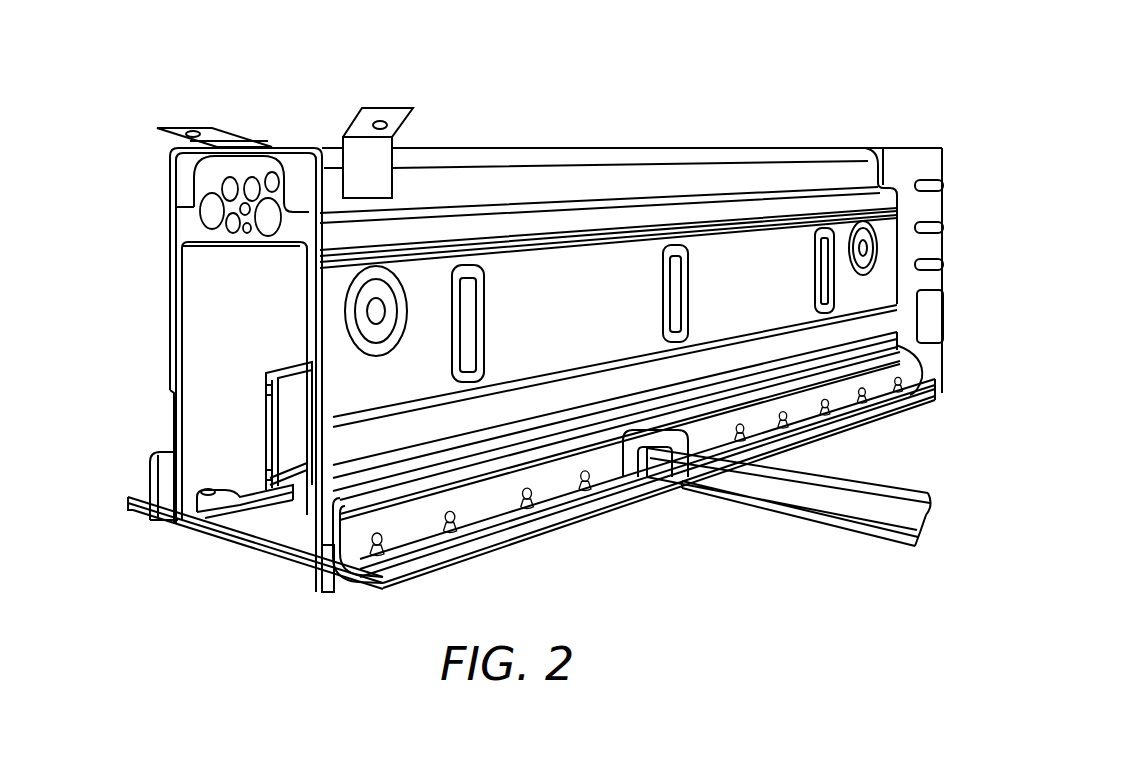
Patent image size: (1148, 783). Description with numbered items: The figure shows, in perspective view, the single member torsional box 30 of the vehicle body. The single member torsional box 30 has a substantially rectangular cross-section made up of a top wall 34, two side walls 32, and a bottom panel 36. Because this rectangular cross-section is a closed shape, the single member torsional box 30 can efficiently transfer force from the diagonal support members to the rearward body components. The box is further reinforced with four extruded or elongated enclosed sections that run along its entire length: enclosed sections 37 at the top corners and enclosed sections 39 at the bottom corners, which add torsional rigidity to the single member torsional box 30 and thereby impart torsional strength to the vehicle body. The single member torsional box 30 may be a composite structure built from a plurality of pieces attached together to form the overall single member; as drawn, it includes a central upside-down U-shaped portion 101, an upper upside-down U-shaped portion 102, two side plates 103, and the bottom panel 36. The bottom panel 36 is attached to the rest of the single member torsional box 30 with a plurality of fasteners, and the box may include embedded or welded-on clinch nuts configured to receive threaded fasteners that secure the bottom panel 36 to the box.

The single member torsional box 30 is at (620, 183).
The side wall 32 is at (177, 338).
The top wall 34 is at (248, 148).
The bottom panel 36 is at (258, 556).
The enclosed section 37 is at (178, 175).
The enclosed section 39 is at (160, 470).
The central upside-down U-shaped portion 101 is at (178, 268).
The upper upside-down U-shaped portion 102 is at (453, 188).
The side plate 103 is at (498, 293).